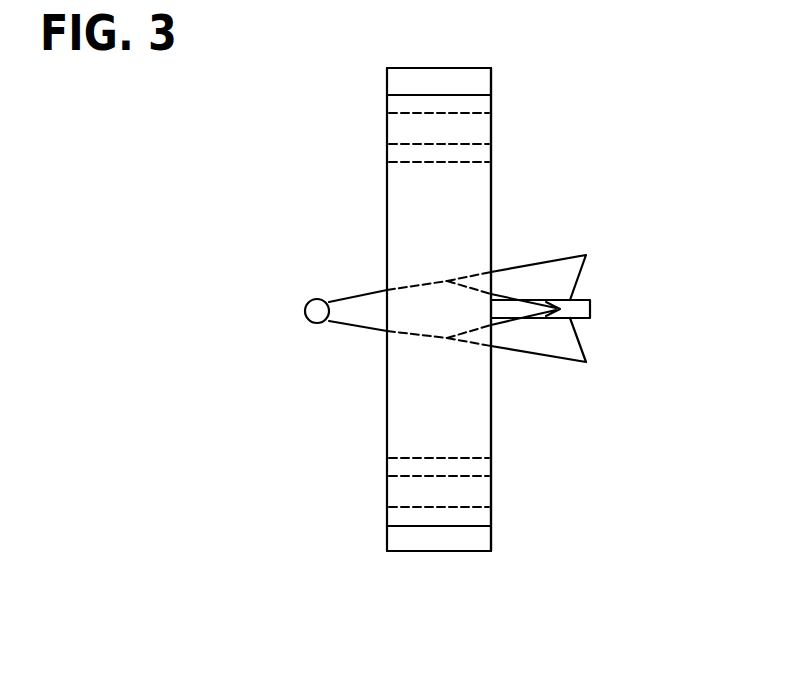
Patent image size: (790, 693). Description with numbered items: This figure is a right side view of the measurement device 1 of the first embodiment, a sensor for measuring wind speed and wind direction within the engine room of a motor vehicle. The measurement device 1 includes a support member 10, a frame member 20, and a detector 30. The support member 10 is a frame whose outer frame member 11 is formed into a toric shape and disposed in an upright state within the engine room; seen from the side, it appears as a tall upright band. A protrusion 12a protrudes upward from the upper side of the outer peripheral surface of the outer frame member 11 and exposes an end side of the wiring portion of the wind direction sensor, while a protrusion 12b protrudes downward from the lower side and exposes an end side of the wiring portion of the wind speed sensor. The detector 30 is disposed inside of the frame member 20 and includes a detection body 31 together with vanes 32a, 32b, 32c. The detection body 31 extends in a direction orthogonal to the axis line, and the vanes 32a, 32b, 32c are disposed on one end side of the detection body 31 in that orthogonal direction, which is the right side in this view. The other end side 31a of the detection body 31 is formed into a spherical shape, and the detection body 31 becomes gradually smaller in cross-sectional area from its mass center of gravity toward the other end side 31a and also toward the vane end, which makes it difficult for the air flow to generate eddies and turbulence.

The measurement device 1 is at (323, 605).
The support member 10 is at (378, 522).
The outer frame member 11 is at (492, 438).
The protrusion 12a is at (463, 80).
The protrusion 12b is at (420, 540).
The frame member 20 is at (491, 133).
The detector 30 is at (350, 344).
The detection body 31 is at (357, 317).
The other end side 31a is at (308, 302).
The vane 32a is at (558, 347).
The vane 32b is at (590, 308).
The vane 32c is at (545, 280).